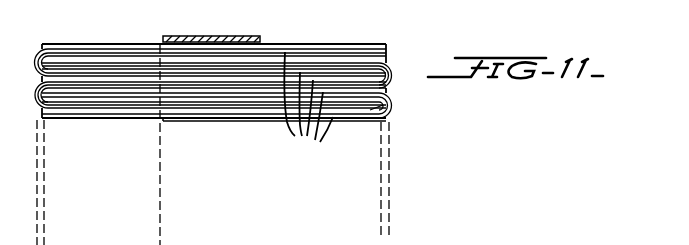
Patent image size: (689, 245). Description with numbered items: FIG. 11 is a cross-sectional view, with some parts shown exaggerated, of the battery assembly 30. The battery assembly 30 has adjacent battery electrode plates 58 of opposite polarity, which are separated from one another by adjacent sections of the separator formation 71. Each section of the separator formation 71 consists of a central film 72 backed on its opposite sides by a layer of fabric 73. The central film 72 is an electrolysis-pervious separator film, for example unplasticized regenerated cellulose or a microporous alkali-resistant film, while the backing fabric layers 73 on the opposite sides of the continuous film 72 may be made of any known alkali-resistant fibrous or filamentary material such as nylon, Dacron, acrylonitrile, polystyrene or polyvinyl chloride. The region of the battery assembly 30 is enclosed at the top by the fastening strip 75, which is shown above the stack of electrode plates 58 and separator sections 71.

The battery assembly 30 is at (342, 33).
The battery electrode plates 58 is at (72, 62).
The separator formation 71 is at (308, 106).
The central film 72 is at (358, 118).
The backing fabric layers 73 is at (367, 122).
The fastening strip 75 is at (225, 43).